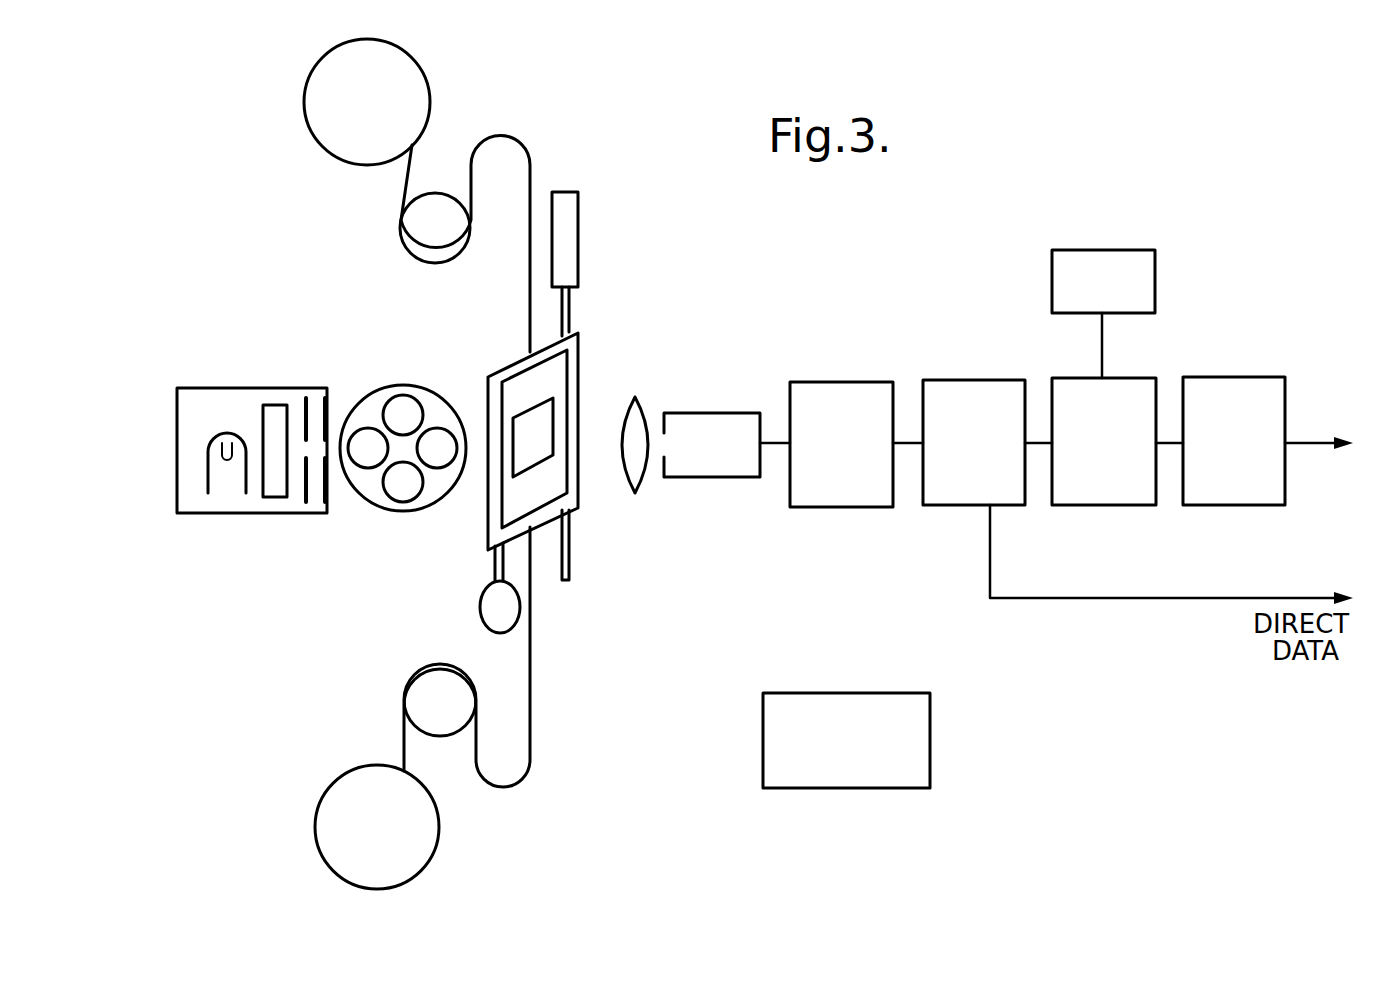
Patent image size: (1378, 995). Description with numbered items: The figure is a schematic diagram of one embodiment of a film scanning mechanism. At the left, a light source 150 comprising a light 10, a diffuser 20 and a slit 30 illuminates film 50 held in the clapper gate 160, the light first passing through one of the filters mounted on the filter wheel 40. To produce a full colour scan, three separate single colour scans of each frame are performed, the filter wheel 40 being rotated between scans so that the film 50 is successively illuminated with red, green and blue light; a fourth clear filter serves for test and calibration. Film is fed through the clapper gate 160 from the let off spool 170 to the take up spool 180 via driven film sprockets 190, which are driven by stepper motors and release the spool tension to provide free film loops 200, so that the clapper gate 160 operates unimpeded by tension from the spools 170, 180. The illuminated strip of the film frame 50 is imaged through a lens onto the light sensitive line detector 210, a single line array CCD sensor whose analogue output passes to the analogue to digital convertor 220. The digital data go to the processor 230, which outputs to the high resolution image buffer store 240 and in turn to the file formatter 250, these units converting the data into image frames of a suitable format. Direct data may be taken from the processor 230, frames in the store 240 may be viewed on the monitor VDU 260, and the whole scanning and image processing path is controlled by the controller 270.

The light 10 is at (207, 442).
The diffuser 20 is at (275, 405).
The slit 30 is at (311, 410).
The filter wheel 40 is at (403, 512).
The film 50 is at (520, 435).
The light source 150 is at (250, 513).
The clapper gate 160 is at (580, 384).
The let off spool 170 is at (328, 835).
The take up spool 180 is at (400, 92).
The driven film sprockets 190 is at (432, 243).
The free film loops 200 is at (520, 143).
The light sensitive line detector 210 is at (580, 202).
The analogue to digital convertor 220 is at (855, 385).
The processor 230 is at (978, 383).
The image buffer store 240 is at (1127, 383).
The file formatter 250 is at (1253, 382).
The monitor VDU 260 is at (1122, 257).
The controller 270 is at (855, 707).